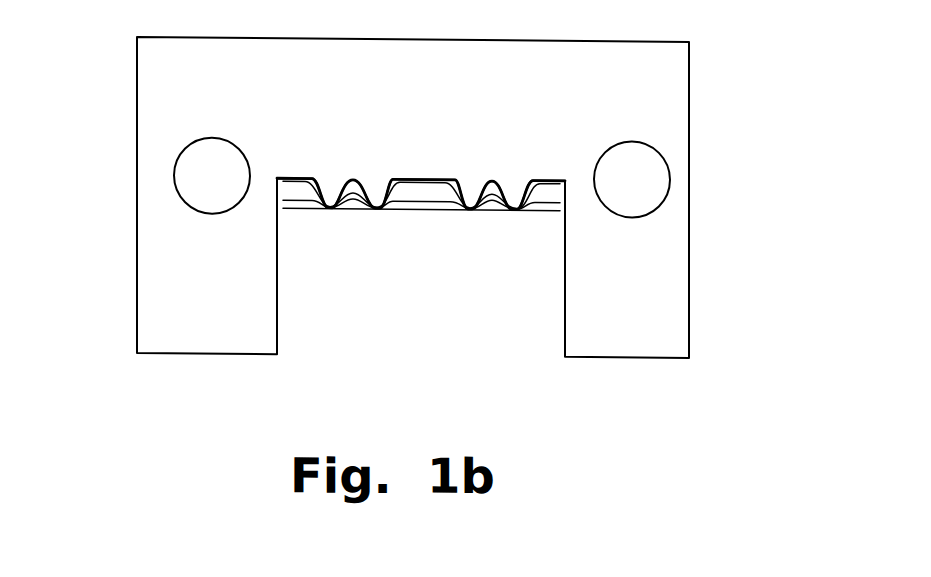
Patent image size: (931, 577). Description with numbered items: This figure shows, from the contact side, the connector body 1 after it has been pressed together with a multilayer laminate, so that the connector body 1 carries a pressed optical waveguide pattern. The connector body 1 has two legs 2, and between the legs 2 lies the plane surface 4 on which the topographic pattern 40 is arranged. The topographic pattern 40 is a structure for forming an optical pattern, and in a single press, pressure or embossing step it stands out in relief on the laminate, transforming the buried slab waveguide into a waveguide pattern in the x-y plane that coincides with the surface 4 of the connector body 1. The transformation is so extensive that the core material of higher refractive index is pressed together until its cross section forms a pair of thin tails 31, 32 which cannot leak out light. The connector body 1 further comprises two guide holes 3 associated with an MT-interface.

The connector body 1 is at (162, 426).
The legs 2 is at (628, 312).
The guide holes 3 is at (640, 176).
The plane surface 4 is at (413, 198).
The topographic pattern 40 is at (313, 200).
The tail 31 is at (520, 207).
The tail 32 is at (472, 207).